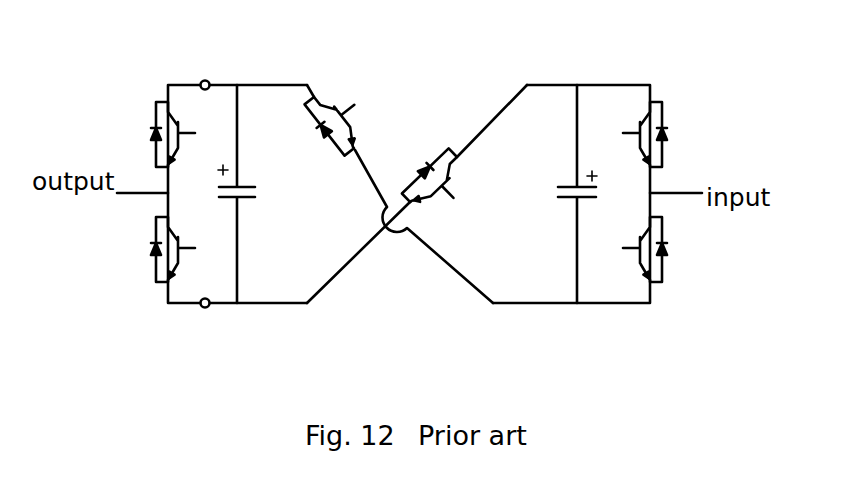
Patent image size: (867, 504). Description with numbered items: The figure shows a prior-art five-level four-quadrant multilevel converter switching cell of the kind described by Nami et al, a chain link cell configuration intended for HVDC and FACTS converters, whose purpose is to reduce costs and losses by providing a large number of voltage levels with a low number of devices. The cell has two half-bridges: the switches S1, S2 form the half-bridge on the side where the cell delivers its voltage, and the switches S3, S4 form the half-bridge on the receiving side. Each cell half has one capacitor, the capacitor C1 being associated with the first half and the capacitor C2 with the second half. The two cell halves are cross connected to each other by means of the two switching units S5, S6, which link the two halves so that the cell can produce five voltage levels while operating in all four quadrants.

The output switch S1 is at (161, 145).
The output switch S2 is at (161, 241).
The input switch S3 is at (660, 130).
The input switch S4 is at (660, 259).
The switching unit S5 is at (443, 176).
The switching unit S6 is at (323, 130).
The capacitor C1 is at (253, 193).
The capacitor C2 is at (566, 194).